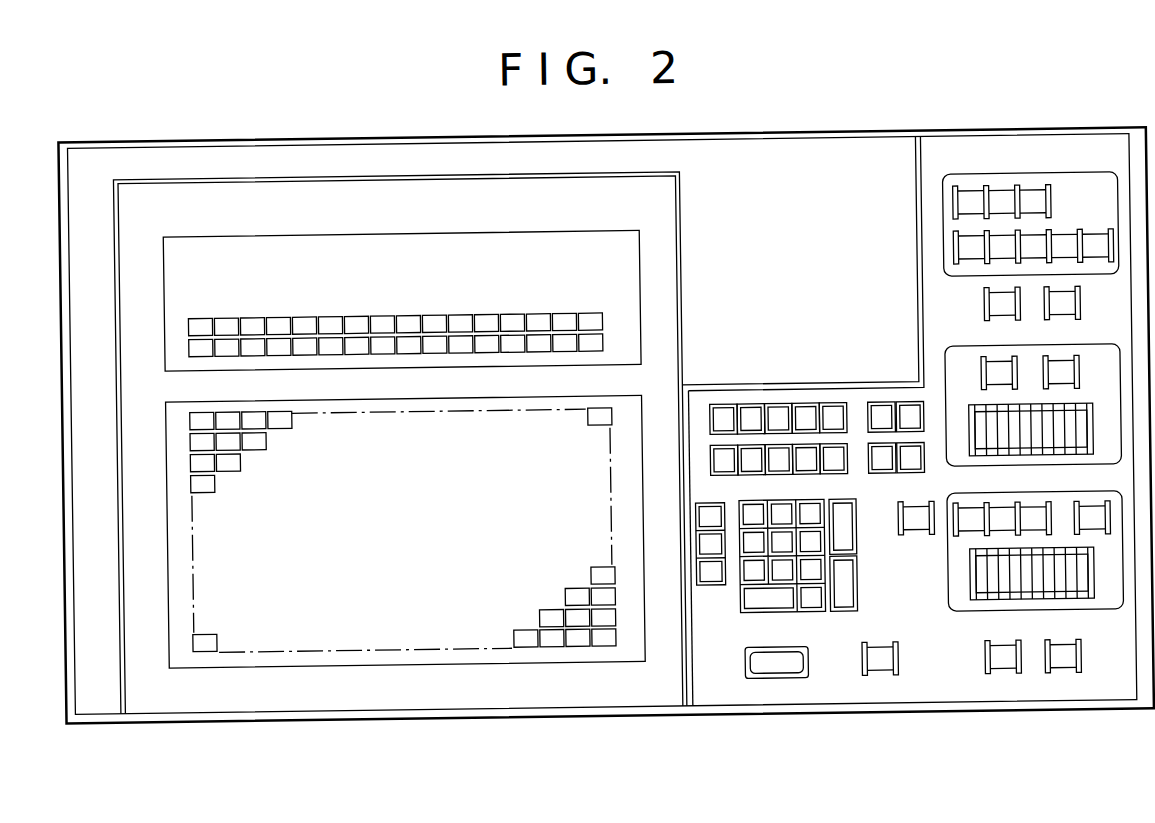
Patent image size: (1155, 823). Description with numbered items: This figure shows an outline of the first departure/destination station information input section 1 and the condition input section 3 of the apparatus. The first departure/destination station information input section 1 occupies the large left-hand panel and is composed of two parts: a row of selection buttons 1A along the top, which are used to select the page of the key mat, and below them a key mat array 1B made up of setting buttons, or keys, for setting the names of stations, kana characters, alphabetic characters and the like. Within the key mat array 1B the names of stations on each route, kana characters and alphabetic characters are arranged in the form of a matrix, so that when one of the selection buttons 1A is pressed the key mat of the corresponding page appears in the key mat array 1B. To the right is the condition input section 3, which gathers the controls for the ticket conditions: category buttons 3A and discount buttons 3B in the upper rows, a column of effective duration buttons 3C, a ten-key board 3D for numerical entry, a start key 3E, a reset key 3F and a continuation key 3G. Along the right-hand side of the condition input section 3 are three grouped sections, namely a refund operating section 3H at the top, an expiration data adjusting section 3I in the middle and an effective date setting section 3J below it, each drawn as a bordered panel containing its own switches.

The first departure/destination station information input section 1 is at (118, 382).
The selection buttons 1A is at (565, 254).
The key mat array 1B is at (522, 433).
The condition input section 3 is at (817, 370).
The category buttons 3A is at (761, 400).
The discount buttons 3B is at (891, 401).
The effective duration buttons 3C is at (707, 588).
The ten-key board 3D is at (806, 615).
The start key 3E is at (763, 660).
The reset key 3F is at (896, 662).
The continuation key 3G is at (912, 539).
The refund operating section 3H is at (1084, 196).
The expiration data adjusting section 3I is at (1099, 366).
The effective date setting section 3J is at (1107, 610).